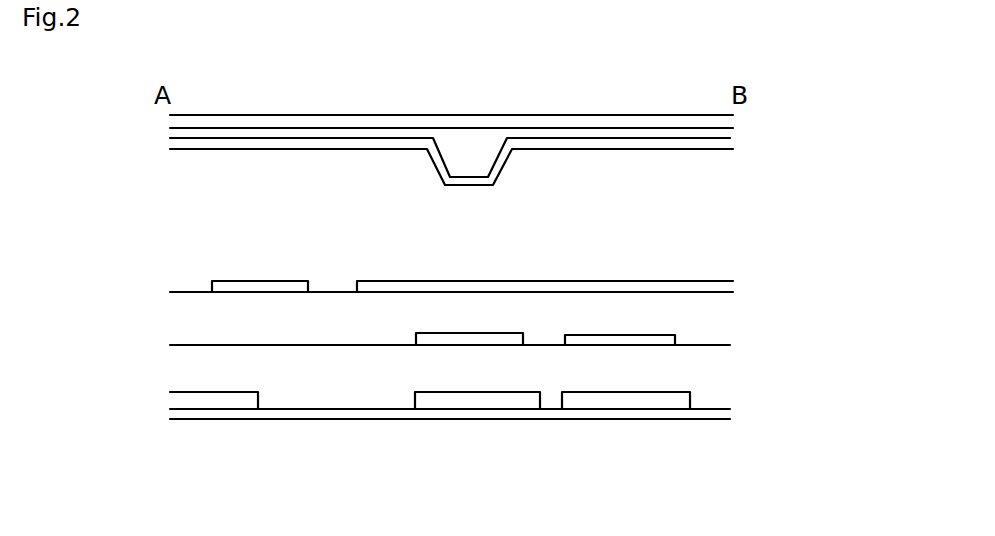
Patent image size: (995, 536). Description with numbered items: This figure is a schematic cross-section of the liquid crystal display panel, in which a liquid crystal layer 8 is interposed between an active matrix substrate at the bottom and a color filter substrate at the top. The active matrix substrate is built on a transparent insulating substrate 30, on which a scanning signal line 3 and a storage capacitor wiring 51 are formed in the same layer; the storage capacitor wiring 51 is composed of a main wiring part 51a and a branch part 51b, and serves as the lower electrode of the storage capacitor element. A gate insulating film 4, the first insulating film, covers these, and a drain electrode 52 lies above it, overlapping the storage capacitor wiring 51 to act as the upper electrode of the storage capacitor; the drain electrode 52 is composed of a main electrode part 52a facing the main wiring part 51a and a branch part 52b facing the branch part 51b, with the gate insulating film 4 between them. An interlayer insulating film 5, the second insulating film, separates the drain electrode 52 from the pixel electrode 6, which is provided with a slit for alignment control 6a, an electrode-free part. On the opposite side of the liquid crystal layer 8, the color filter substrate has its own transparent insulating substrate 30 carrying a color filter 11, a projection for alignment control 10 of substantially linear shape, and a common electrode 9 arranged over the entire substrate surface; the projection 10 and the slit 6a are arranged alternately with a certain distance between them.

The transparent insulating substrate 30 is at (727, 122).
The color filter 11 is at (727, 131).
The common electrode 9 is at (727, 143).
The projection for alignment control 10 is at (473, 152).
The liquid crystal layer 8 is at (720, 237).
The pixel electrode 6 is at (212, 288).
The slit for alignment control 6a is at (330, 283).
The interlayer insulating film 5 is at (178, 317).
The drain electrode 52 is at (641, 317).
The main electrode part 52a is at (670, 337).
The branch part 52b is at (515, 338).
The gate insulating film 4 is at (178, 367).
The scanning signal line 3 is at (178, 402).
The storage capacitor wiring 51 is at (642, 379).
The main wiring part 51a is at (685, 397).
The branch part 51b is at (537, 397).